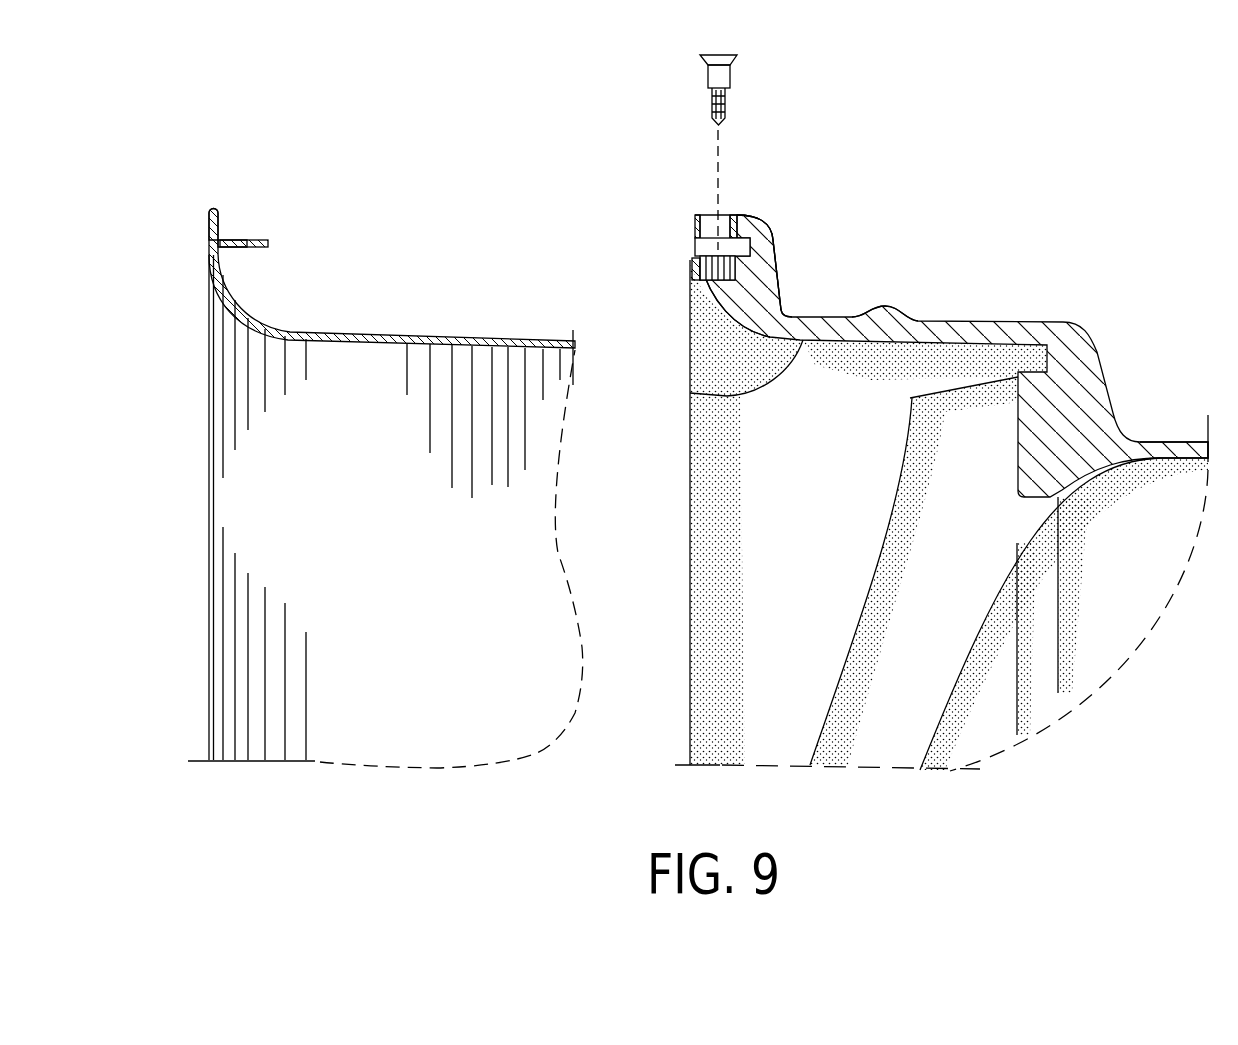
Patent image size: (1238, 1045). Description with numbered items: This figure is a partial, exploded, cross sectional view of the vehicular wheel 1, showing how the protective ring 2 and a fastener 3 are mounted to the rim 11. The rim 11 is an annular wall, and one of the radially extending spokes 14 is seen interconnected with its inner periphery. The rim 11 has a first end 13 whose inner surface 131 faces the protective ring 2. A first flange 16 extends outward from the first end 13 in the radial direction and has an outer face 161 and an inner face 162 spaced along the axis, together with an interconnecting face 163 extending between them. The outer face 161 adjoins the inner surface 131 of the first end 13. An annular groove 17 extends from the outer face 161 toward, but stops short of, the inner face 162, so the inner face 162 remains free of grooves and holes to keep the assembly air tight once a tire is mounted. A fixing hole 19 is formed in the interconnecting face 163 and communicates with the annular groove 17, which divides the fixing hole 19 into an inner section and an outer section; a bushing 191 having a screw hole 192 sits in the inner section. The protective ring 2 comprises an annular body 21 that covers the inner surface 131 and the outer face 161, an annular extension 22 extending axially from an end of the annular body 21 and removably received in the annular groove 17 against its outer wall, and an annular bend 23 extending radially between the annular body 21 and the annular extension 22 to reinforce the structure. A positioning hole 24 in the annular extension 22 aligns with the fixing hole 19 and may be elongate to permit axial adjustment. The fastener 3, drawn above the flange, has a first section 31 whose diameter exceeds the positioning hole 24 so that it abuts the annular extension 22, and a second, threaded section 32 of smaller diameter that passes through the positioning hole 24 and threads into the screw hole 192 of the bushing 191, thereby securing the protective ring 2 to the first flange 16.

The wheel 1 is at (1067, 322).
The rim 11 is at (1178, 440).
The first end 13 is at (855, 316).
The inner surface 131 is at (693, 395).
The spokes 14 is at (873, 740).
The first flange 16 is at (765, 237).
The outer face 161 is at (696, 270).
The inner face 162 is at (775, 252).
The interconnecting face 163 is at (745, 213).
The annular groove 17 is at (710, 248).
The fixing holes 19 is at (708, 215).
The bushing 191 is at (735, 270).
The screw hole 192 is at (692, 302).
The protective ring 2 is at (207, 411).
The annular body 21 is at (375, 340).
The annular extension 22 is at (269, 243).
The annular bend 23 is at (223, 225).
The positioning holes 24 is at (247, 240).
The fastener 3 is at (738, 59).
The first section 31 is at (712, 78).
The second, threaded section 32 is at (735, 103).